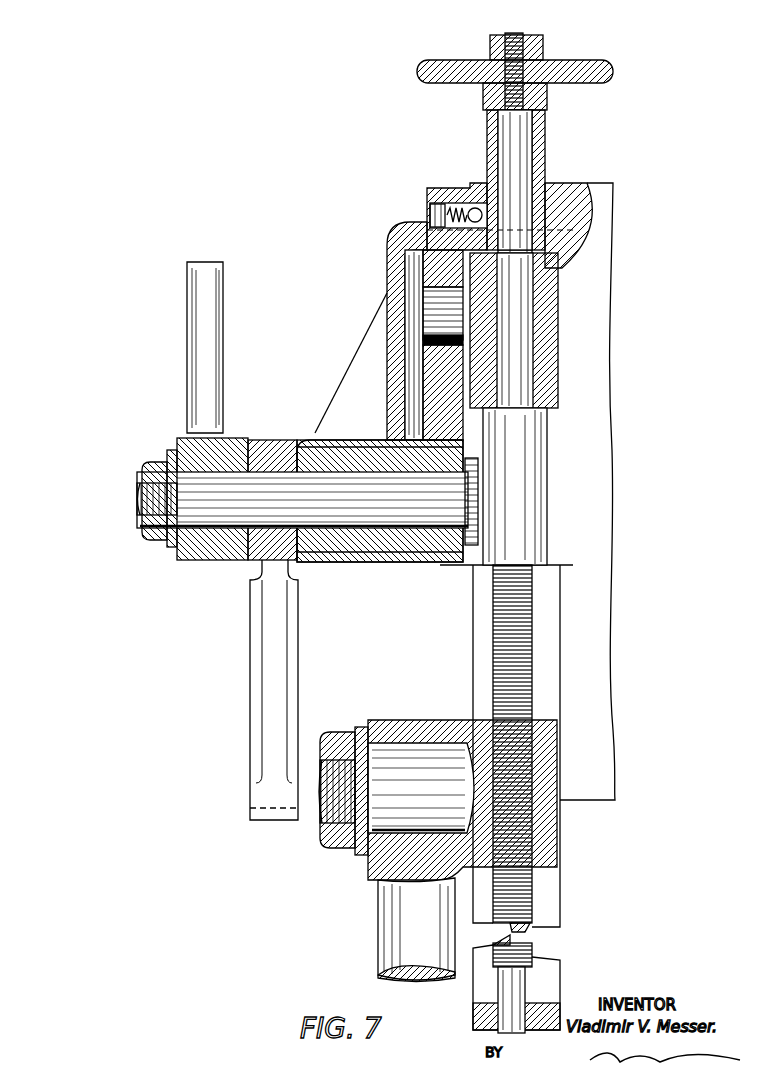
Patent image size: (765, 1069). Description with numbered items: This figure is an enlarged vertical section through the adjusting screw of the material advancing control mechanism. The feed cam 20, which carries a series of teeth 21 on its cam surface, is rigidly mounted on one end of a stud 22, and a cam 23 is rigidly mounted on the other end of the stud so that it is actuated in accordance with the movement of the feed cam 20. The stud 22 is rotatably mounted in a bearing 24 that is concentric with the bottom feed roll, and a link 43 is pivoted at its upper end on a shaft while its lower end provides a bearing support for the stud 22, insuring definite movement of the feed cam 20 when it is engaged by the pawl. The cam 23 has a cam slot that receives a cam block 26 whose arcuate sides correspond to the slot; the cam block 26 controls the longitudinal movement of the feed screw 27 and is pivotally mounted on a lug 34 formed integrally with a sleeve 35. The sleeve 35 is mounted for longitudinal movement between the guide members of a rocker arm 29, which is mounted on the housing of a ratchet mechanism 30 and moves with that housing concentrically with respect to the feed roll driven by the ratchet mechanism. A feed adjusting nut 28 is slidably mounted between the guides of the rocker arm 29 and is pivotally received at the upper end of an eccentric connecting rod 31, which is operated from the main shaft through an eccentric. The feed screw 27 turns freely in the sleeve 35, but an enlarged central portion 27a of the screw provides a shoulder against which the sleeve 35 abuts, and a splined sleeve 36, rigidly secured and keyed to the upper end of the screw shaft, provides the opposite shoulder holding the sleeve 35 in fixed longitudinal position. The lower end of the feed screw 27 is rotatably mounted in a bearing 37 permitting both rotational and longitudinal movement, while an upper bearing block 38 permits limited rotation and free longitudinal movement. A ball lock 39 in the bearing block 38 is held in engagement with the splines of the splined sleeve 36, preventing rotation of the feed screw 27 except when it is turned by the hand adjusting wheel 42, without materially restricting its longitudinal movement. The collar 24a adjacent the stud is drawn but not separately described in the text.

The feed cam 20 is at (250, 798).
The teeth 21 is at (283, 815).
The stud 22 is at (135, 507).
The cam 23 is at (437, 397).
The bearing 24 is at (360, 553).
The collar 24a is at (423, 285).
The cam block 26 is at (408, 262).
The feed screw 27 is at (530, 642).
The enlarged portion 27a is at (548, 472).
The feed adjusting nut 28 is at (555, 718).
The rocker arm 29 is at (473, 638).
The ratchet mechanism 30 is at (597, 422).
The eccentric connecting rod 31 is at (385, 920).
The lug 34 is at (430, 318).
The sleeve 35 is at (553, 280).
The splined sleeve 36 is at (540, 153).
The bearing 37 is at (547, 125).
The upper bearing block 38 is at (457, 185).
The ball lock 39 is at (472, 207).
The hand adjusting wheel 42 is at (588, 64).
The link 43 is at (188, 350).